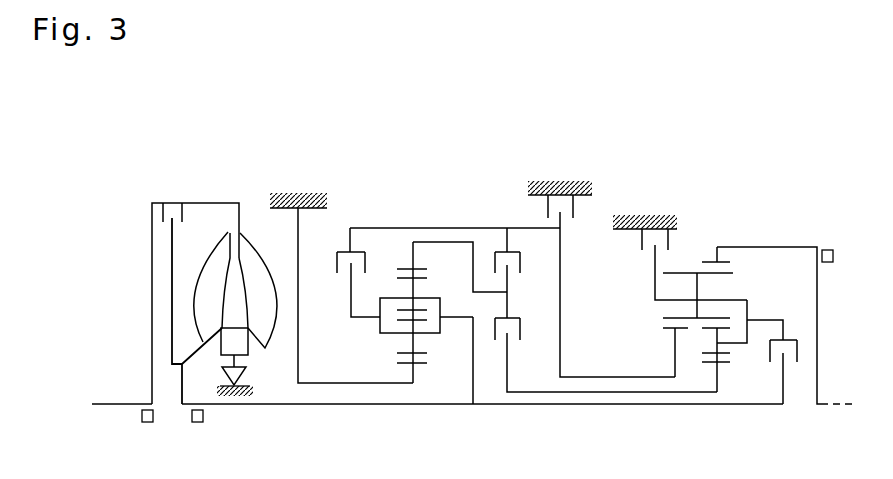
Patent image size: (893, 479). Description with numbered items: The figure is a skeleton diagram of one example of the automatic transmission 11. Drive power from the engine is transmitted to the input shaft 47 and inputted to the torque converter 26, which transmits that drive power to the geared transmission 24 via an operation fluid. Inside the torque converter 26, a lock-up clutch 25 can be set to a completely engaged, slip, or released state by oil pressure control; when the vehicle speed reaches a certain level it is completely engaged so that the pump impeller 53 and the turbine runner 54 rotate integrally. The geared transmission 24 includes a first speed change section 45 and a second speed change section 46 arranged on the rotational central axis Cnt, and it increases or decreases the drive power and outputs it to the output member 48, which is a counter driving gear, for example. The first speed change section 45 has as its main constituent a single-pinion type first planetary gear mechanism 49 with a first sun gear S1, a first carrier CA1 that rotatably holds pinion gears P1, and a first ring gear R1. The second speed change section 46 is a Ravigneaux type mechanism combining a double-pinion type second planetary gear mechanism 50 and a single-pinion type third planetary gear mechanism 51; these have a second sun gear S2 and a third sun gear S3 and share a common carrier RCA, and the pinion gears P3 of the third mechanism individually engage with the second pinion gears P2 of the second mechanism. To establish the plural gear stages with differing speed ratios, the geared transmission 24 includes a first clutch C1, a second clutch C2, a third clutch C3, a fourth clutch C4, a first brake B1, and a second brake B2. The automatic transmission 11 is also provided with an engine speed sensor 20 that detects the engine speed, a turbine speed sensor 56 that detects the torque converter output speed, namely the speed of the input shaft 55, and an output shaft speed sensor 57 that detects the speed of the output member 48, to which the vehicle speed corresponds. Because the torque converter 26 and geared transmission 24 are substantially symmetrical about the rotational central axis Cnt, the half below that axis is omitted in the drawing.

The automatic transmission 11 is at (441, 155).
The engine speed sensor 20 is at (154, 414).
The geared transmission 24 is at (606, 262).
The lock-up clutch 25 is at (162, 214).
The torque converter 26 is at (208, 259).
The first speed change section 45 is at (436, 283).
The second speed change section 46 is at (730, 281).
The input shaft 47 is at (123, 405).
The output member 48 is at (727, 262).
The first planetary gear mechanism 49 is at (424, 397).
The second planetary gear mechanism 50 is at (781, 256).
The third planetary gear mechanism 51 is at (697, 243).
The pump impeller 53 is at (250, 243).
The turbine runner 54 is at (220, 242).
The input shaft 55 is at (298, 405).
The turbine speed sensor 56 is at (204, 414).
The output shaft speed sensor 57 is at (834, 256).
The first brake B1 is at (574, 206).
The second brake B2 is at (642, 243).
The first clutch C1 is at (520, 327).
The second clutch C2 is at (797, 350).
The third clutch C3 is at (520, 262).
The fourth clutch C4 is at (338, 265).
The first carrier CA1 is at (358, 318).
The first ring gear R1 is at (420, 268).
The pinion gears P1 is at (420, 280).
The first sun gear S1 is at (420, 366).
The second pinion gears P2 is at (705, 277).
The second sun gear S2 is at (672, 330).
The pinion gears P3 is at (708, 333).
The third sun gear S3 is at (730, 364).
The carrier RCA is at (783, 320).
The rotational central axis Cnt is at (842, 403).